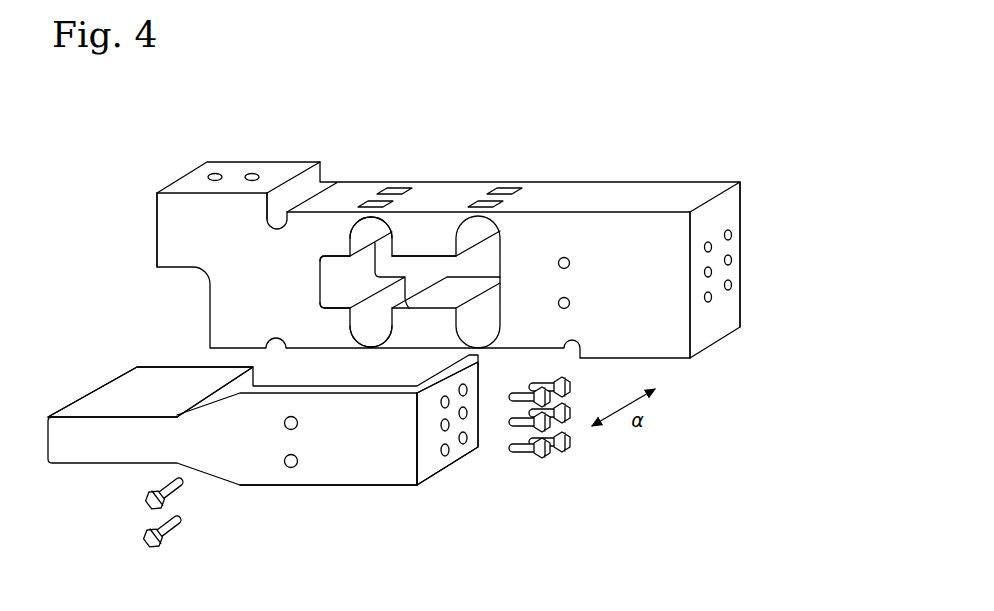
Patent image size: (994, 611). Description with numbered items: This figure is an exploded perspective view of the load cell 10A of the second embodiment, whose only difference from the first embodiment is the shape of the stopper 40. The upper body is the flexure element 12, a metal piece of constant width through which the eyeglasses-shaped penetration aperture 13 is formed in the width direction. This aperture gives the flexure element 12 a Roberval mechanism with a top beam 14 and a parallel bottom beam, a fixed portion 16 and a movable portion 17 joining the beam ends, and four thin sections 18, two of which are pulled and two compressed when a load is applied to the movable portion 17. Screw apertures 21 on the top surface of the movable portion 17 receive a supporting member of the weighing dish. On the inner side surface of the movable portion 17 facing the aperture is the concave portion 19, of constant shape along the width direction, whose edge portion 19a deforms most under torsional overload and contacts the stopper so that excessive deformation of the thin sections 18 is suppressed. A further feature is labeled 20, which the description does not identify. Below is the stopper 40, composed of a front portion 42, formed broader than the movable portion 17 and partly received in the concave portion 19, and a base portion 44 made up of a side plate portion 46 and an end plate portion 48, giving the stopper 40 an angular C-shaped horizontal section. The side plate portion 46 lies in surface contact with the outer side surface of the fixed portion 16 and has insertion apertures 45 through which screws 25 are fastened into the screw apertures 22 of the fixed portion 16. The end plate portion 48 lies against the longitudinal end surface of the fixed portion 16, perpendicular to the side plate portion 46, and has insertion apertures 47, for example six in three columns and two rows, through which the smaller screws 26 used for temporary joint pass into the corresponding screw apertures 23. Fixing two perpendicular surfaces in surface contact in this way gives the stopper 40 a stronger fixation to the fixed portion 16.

The load cell 10A is at (584, 148).
The flexure element 12 is at (143, 239).
The penetration aperture 13 is at (438, 143).
The top beam 14 is at (433, 236).
The fixed portion 16 is at (665, 267).
The movable portion 17 is at (262, 260).
The thin section 18 is at (371, 214).
The concave portion 19 is at (328, 285).
The edge portion 19a is at (340, 256).
The strain gauge attachment slot 20 is at (399, 187).
The screw aperture 21 is at (258, 175).
The screw aperture 22 is at (564, 309).
The screw aperture 23 is at (732, 286).
The screw 25 is at (141, 537).
The screw 26 is at (562, 456).
The stopper 40 is at (90, 375).
The front portion 42 is at (153, 398).
The base portion 44 is at (450, 523).
The insertion aperture 45 is at (293, 468).
The side plate portion 46 is at (358, 462).
The insertion aperture 47 is at (465, 445).
The end plate portion 48 is at (444, 457).